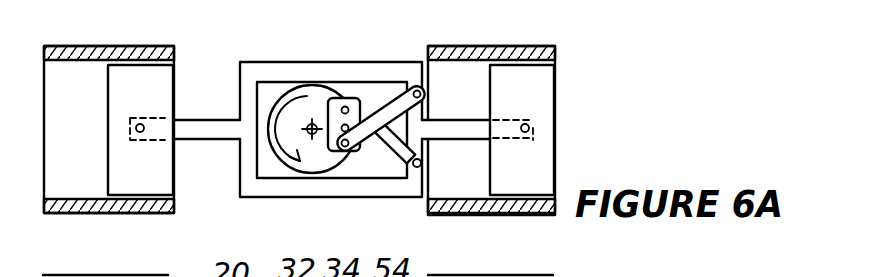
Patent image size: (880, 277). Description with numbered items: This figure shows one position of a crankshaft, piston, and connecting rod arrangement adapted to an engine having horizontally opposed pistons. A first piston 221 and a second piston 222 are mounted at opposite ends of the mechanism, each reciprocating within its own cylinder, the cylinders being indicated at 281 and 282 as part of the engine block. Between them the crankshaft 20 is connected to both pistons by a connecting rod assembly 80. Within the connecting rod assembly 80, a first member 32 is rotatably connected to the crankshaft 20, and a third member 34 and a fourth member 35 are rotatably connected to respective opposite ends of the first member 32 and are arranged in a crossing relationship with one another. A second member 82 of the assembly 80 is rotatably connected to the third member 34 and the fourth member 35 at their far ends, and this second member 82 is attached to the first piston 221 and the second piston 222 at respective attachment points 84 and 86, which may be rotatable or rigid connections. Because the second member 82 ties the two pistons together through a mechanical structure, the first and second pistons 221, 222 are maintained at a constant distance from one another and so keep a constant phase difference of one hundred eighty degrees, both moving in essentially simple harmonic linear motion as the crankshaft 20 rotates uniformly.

The crankshaft 20 is at (296, 93).
The connecting rod assembly 80 is at (304, 62).
The second member 82 is at (282, 188).
The first member 32 is at (360, 100).
The third member 34 is at (390, 107).
The fourth member 35 is at (389, 144).
The attachment point 84 is at (136, 126).
The attachment point 86 is at (530, 125).
The first piston 221 is at (153, 175).
The second piston 222 is at (540, 163).
The first cylinder housing 281 is at (103, 208).
The second cylinder housing 282 is at (475, 208).